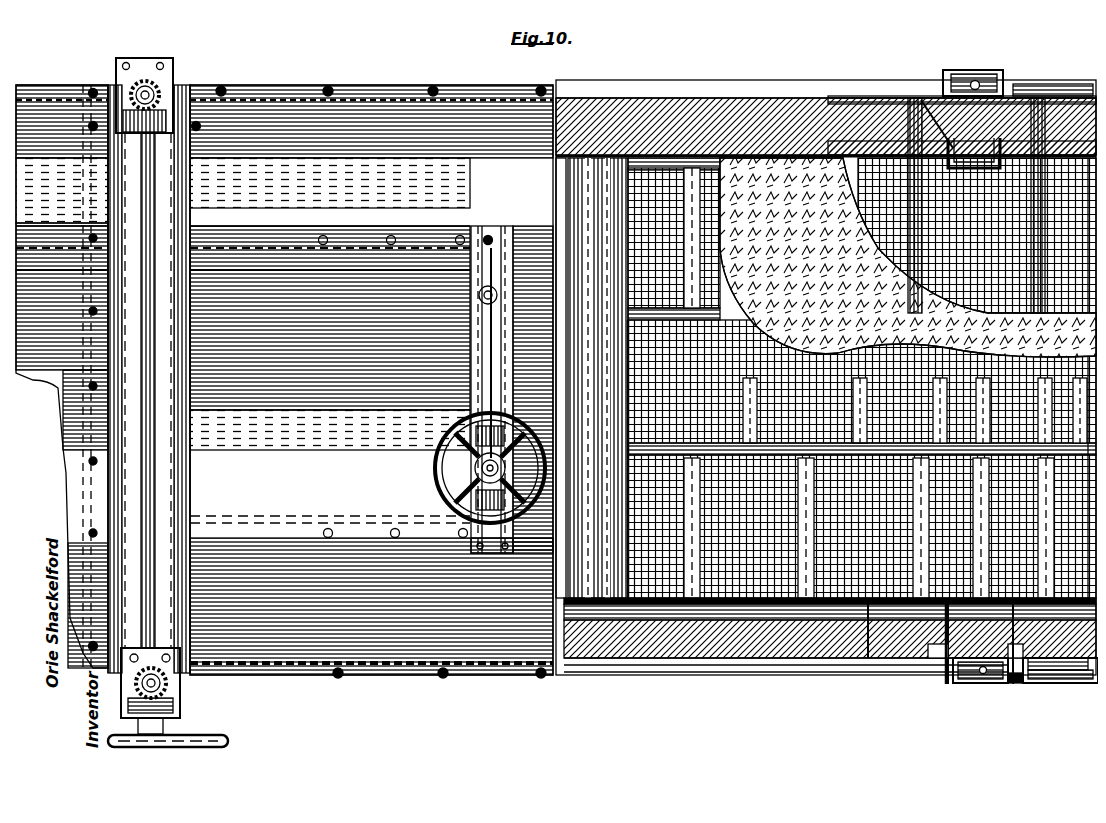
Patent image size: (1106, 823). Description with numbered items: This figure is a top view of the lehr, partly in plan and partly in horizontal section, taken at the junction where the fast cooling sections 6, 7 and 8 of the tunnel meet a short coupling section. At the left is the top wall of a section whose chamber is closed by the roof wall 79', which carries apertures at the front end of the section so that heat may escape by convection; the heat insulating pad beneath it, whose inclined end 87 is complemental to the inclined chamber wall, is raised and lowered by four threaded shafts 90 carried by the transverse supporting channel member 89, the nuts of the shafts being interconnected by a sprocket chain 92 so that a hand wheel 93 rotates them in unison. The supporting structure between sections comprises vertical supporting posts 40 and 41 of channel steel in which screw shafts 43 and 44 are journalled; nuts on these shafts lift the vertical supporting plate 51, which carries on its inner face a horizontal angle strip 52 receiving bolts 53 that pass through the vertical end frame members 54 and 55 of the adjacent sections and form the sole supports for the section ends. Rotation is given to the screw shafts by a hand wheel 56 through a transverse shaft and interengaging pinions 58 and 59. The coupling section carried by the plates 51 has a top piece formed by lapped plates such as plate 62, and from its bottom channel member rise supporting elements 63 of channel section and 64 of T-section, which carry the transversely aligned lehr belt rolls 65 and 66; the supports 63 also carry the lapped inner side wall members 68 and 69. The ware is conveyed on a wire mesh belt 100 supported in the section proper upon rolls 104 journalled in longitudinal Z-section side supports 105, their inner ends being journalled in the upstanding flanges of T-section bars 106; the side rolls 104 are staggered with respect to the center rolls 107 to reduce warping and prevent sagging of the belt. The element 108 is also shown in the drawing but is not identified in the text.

The lehr section 6 is at (1071, 67).
The lehr section 7 is at (403, 72).
The lehr section 8 is at (29, 76).
The vertical supporting post 40 is at (975, 70).
The vertical supporting post 41 is at (992, 662).
The screw shaft 43 is at (967, 72).
The screw shaft 44 is at (1003, 668).
The vertical supporting plate 51 is at (1028, 76).
The angle strip 52 is at (960, 676).
The bolt 53 is at (925, 642).
The vertical end frame member 54 is at (1045, 75).
The vertical end frame member 55 is at (933, 90).
The hand wheel 56 is at (222, 734).
The pinion 58 is at (160, 690).
The pinion 59 is at (160, 84).
The lapped plate 62 is at (968, 298).
The supporting element 63 is at (915, 90).
The supporting element 64 is at (960, 446).
The lehr belt roll 65 is at (940, 498).
The lehr belt roll 66 is at (965, 358).
The inner side wall member 68 is at (1035, 677).
The inner side wall member 69 is at (938, 652).
The roof wall 79' is at (243, 237).
The inclined end 87 is at (140, 282).
The transverse supporting channel member 89 is at (483, 240).
The shaft 90 is at (471, 288).
The sprocket chain 92 is at (450, 353).
The hand wheel 93 is at (432, 460).
The wire mesh belt 100 is at (560, 190).
The roll 104 is at (660, 226).
The side support 105 is at (665, 156).
The T-section bar 106 is at (660, 424).
The roll 107 is at (740, 398).
The end post 108 is at (1070, 402).